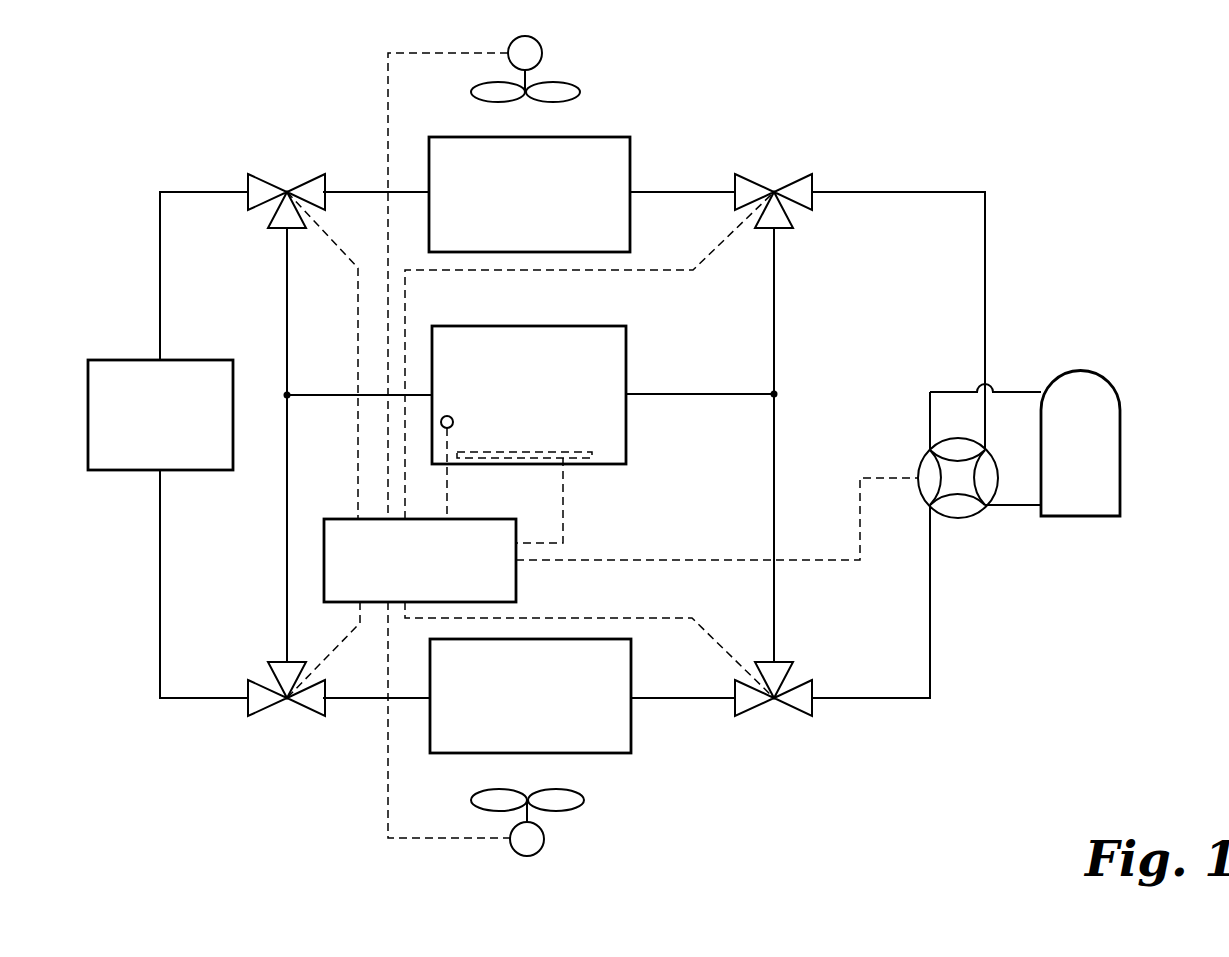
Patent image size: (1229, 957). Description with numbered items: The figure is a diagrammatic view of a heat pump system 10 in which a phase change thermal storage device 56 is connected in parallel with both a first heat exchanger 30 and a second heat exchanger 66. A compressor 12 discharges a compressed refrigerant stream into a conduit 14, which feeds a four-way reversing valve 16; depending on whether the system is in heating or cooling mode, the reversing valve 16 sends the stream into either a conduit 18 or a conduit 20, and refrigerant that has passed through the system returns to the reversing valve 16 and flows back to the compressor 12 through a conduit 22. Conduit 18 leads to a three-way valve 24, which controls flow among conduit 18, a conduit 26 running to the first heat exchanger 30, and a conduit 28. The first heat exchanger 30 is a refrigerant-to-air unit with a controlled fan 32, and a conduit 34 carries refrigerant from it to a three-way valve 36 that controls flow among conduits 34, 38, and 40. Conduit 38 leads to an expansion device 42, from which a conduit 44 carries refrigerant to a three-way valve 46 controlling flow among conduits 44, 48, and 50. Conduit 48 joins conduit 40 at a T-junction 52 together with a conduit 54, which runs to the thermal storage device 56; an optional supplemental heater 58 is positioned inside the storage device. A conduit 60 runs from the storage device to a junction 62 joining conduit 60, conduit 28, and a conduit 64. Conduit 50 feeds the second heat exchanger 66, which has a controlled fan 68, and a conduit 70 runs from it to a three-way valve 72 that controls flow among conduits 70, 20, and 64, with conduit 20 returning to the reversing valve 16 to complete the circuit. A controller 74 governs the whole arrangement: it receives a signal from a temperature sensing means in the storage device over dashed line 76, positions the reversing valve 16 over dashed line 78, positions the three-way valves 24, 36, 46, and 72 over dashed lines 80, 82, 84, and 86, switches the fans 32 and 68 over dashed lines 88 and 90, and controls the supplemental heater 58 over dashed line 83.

The heat pump system 10 is at (959, 168).
The compressor 12 is at (1056, 444).
The conduit 14 is at (1019, 392).
The four-way reversing valve 16 is at (962, 536).
The conduit 18 is at (985, 300).
The conduit 20 is at (930, 598).
The conduit 22 is at (1020, 505).
The three-way valve 24 is at (780, 176).
The conduit 26 is at (662, 192).
The conduit 28 is at (774, 293).
The first heat exchanger 30 is at (607, 148).
The controlled fan 32 is at (577, 68).
The conduit 34 is at (345, 192).
The three-way valve 36 is at (283, 174).
The conduit 38 is at (160, 233).
The conduit 40 is at (287, 310).
The expansion device 42 is at (185, 472).
The conduit 44 is at (160, 597).
The three-way valve 46 is at (292, 724).
The conduit 48 is at (262, 528).
The conduit 50 is at (365, 700).
The three-way (T) junction 52 is at (287, 395).
The conduit 54 is at (320, 395).
The thermal storage device 56 is at (626, 352).
The supplemental heater 58 is at (580, 467).
The conduit 60 is at (685, 393).
The junction 62 is at (780, 396).
The conduit 64 is at (774, 478).
The second heat exchanger 66 is at (631, 737).
The controlled fan 68 is at (557, 851).
The conduit 70 is at (675, 700).
The three-way valve 72 is at (779, 712).
The controller 74 is at (516, 577).
The dashed line 76 is at (447, 480).
The dashed line 78 is at (680, 558).
The dashed line 80 is at (648, 275).
The dashed line 82 is at (328, 355).
The dashed line 83 is at (563, 502).
The dashed line 84 is at (332, 648).
The dashed line 86 is at (622, 615).
The dashed line 88 is at (387, 117).
The dashed line 90 is at (388, 815).